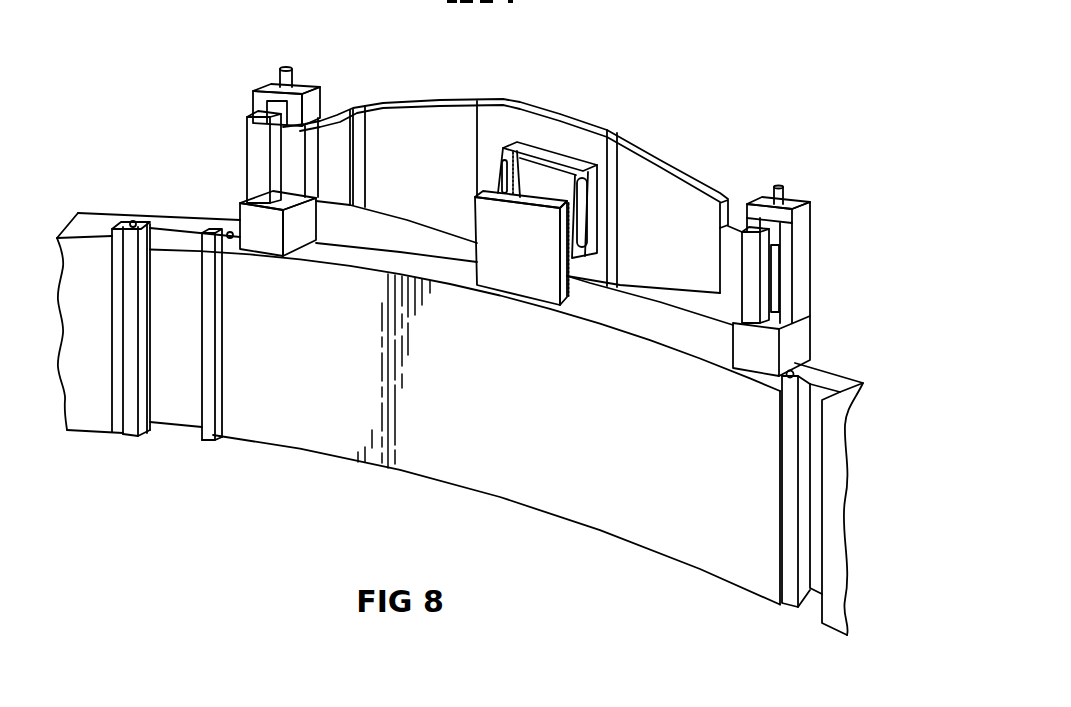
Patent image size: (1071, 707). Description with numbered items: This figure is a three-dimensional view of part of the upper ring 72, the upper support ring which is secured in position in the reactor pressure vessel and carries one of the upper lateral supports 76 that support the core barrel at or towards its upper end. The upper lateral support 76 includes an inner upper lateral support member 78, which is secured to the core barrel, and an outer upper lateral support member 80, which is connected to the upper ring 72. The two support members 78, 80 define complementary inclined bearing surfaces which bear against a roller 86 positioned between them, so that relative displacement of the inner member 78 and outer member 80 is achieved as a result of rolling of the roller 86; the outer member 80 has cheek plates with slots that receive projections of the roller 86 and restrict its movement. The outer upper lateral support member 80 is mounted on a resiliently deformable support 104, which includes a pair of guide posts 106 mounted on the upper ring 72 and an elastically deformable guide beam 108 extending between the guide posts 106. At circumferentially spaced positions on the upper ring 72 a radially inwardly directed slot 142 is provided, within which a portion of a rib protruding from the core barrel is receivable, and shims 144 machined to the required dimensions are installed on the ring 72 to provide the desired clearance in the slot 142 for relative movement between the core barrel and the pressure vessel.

The upper ring 72 is at (535, 482).
The upper lateral support 76 is at (689, 107).
The inner upper lateral support member 78 is at (517, 277).
The outer upper lateral support member 80 is at (546, 150).
The roller 86 is at (583, 227).
The resiliently deformable support 104 is at (360, 76).
The guide post 106 is at (261, 56).
The guide beam 108 is at (442, 137).
The slot 142 is at (171, 448).
The shim 144 is at (197, 248).